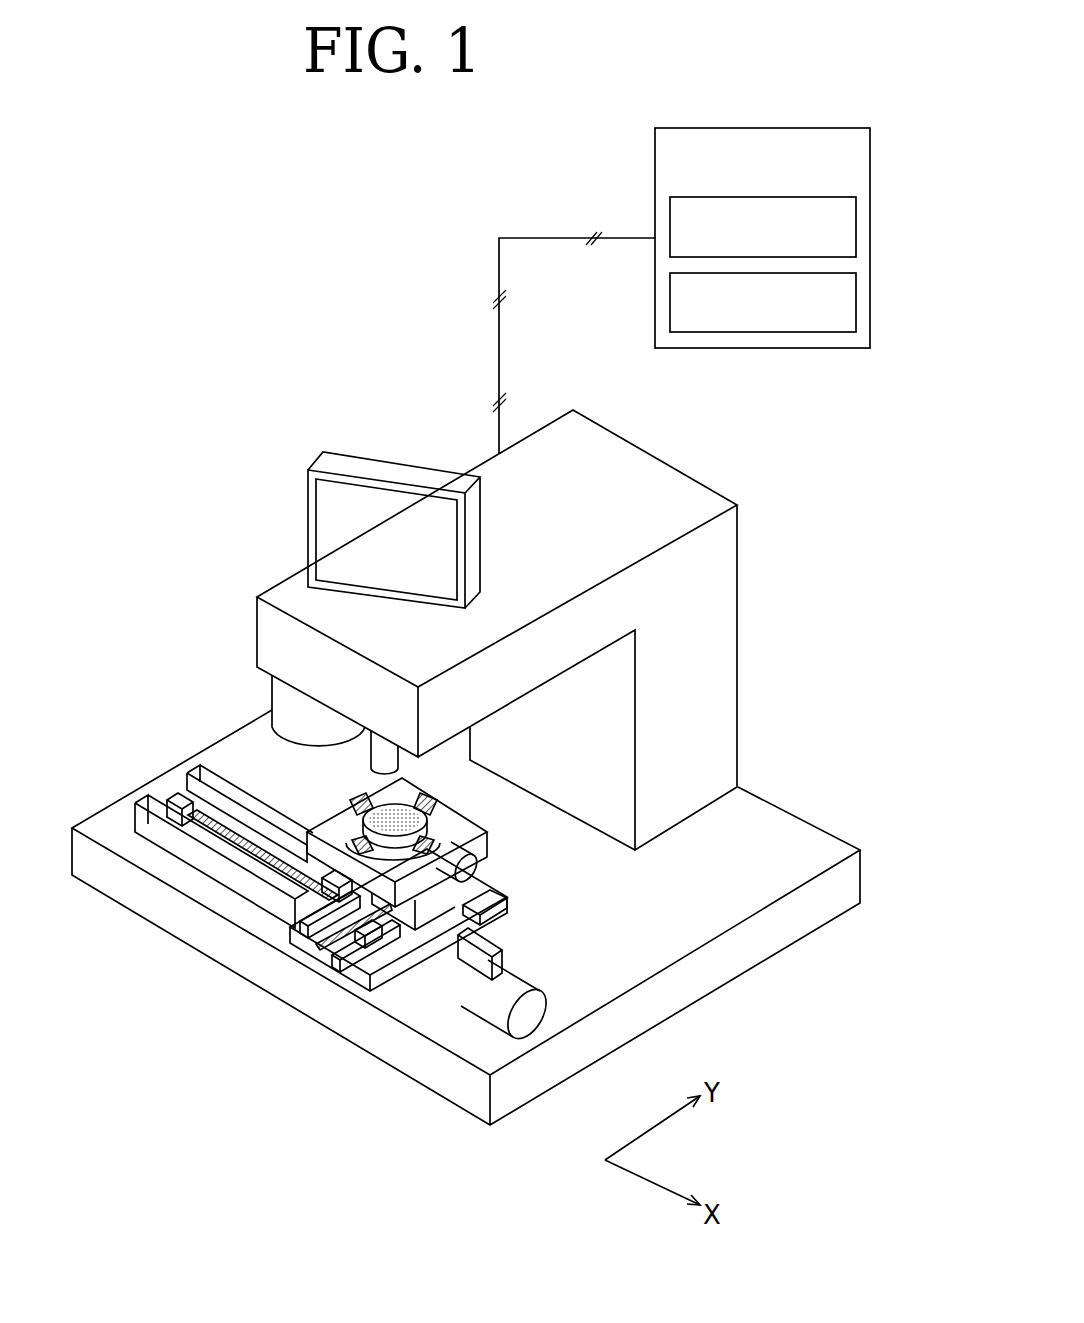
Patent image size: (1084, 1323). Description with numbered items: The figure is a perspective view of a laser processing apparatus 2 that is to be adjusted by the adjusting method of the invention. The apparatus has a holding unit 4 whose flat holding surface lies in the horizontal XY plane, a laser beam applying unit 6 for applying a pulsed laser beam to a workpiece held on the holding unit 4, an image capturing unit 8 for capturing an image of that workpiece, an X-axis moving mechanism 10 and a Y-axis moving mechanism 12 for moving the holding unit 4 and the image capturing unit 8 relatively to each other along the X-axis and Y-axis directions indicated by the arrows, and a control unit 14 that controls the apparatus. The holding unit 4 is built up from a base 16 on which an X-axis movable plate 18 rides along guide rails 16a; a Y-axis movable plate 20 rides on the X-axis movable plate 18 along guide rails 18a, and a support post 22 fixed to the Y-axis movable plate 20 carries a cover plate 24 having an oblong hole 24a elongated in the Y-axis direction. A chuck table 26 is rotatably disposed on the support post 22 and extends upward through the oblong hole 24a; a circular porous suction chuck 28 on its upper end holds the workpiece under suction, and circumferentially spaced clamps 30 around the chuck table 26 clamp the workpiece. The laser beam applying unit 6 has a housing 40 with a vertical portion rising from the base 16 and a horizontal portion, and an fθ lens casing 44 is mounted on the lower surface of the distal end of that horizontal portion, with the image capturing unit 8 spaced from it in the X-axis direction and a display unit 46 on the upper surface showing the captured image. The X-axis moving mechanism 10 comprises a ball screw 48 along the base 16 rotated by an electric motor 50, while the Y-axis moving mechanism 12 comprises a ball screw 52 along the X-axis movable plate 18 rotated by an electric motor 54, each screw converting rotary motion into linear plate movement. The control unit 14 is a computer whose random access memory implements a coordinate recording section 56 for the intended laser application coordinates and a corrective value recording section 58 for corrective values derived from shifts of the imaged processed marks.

The laser processing apparatus 2 is at (466, 776).
The holding unit 4 is at (372, 949).
The laser beam applying unit 6 is at (298, 648).
The image capturing unit 8 is at (381, 761).
The X-axis moving mechanism 10 is at (534, 983).
The Y-axis moving mechanism 12 is at (522, 883).
The control unit 14 is at (794, 207).
The base 16 is at (466, 917).
The guide rails 16a is at (183, 771).
The X-axis movable plate 18 is at (372, 968).
The guide rails 18a is at (330, 930).
The Y-axis movable plate 20 is at (436, 928).
The support post 22 is at (405, 948).
The cover plate 24 is at (355, 887).
The oblong hole 24a is at (455, 817).
The chuck table 26 is at (268, 873).
The suction chuck 28 is at (365, 875).
The clamps 30 is at (352, 802).
The housing 40 is at (720, 599).
The fθ lens casing 44 is at (290, 713).
The display unit 46 is at (355, 472).
The ball screw 48 is at (478, 936).
The electric motor 50 is at (500, 992).
The ball screw 52 is at (484, 903).
The electric motor 54 is at (476, 866).
The coordinate recording section 56 is at (858, 238).
The corrective value recording section 58 is at (858, 312).